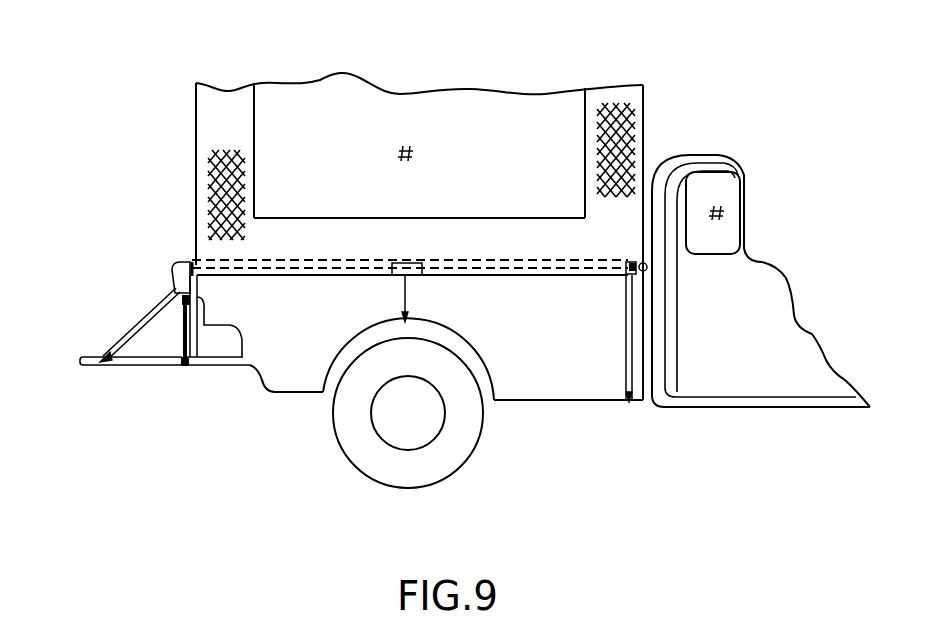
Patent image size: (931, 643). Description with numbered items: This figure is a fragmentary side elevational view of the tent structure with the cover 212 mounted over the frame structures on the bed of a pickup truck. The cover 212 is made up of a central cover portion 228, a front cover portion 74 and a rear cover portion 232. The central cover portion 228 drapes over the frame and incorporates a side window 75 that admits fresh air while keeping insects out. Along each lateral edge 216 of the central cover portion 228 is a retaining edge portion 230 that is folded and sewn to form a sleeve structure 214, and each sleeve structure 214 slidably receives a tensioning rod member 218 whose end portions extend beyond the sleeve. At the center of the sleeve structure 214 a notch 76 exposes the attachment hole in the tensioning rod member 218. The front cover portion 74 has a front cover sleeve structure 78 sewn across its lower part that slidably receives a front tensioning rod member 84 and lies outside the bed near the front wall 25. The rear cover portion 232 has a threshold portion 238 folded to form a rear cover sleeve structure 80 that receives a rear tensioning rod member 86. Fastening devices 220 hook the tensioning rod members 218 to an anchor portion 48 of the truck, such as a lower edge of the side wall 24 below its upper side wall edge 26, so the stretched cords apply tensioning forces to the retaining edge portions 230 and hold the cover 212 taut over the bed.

The cover 212 is at (390, 89).
The central cover portion 228 is at (228, 100).
The rear cover portion 232 is at (195, 157).
The side window 75 is at (480, 125).
The front cover portion 74 is at (645, 150).
The side wall 24 is at (520, 383).
The lateral edge 216 is at (623, 243).
The sleeve structure 214 is at (290, 278).
The fastening device 220 is at (184, 296).
The notch 76 is at (405, 278).
The retaining edge portion 230 is at (615, 250).
The front cover sleeve structure 78 is at (646, 268).
The front tensioning rod member 84 is at (636, 272).
The front wall 25 is at (640, 320).
The anchor portion 48 is at (404, 300).
The tensioning rod member 218 is at (186, 260).
The upper side wall edge 26 is at (180, 268).
The threshold portion 238 is at (183, 337).
The rear cover sleeve structure 80 is at (180, 358).
The rear tensioning rod member 86 is at (178, 367).